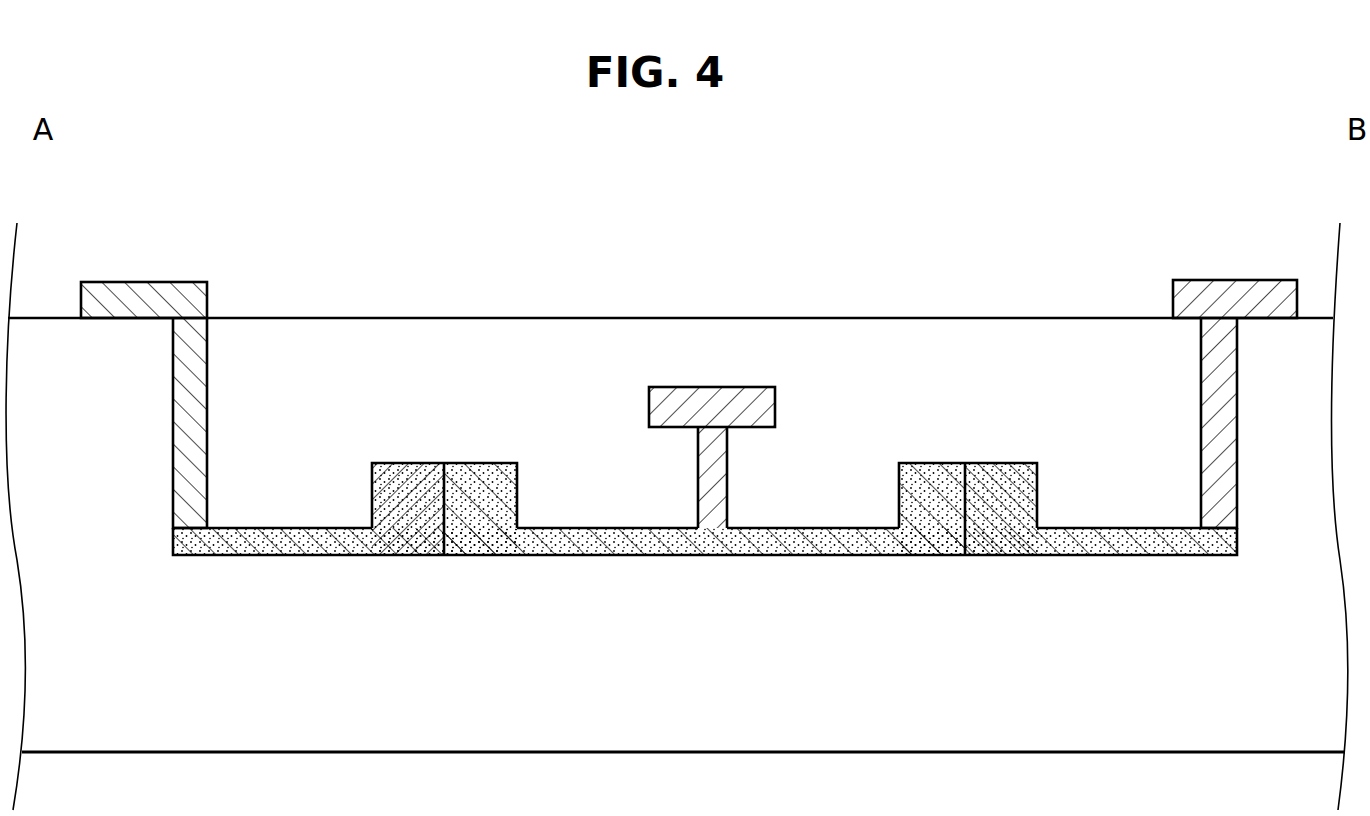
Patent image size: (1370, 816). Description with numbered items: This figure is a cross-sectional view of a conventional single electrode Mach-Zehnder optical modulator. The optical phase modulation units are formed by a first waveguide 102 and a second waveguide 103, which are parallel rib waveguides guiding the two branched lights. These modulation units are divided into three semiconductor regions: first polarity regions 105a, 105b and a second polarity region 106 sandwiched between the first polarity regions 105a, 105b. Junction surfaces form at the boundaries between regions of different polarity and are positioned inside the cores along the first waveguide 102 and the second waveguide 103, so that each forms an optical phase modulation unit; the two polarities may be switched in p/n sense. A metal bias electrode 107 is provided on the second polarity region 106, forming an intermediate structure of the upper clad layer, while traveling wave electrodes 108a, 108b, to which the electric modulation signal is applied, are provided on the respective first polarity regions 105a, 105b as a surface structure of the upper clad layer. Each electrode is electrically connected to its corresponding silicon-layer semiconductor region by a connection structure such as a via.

The first waveguide 102 is at (517, 452).
The second waveguide 103 is at (899, 452).
The first polarity region 105a is at (258, 528).
The first polarity region 105b is at (1068, 528).
The second polarity region 106 is at (705, 398).
The bias electrode 107 is at (695, 387).
The traveling wave electrode 108a is at (158, 282).
The traveling wave electrode 108b is at (1215, 280).